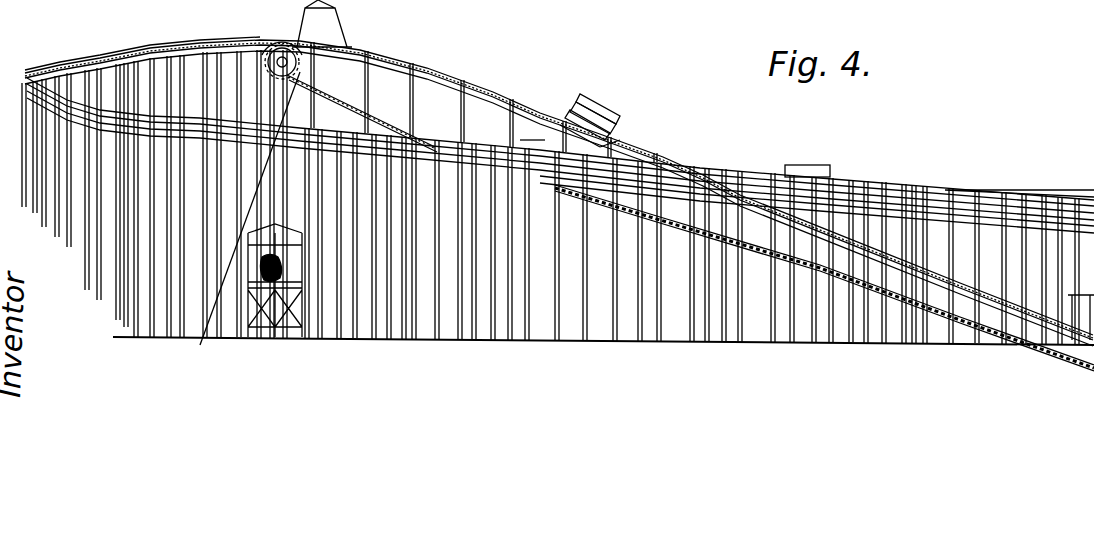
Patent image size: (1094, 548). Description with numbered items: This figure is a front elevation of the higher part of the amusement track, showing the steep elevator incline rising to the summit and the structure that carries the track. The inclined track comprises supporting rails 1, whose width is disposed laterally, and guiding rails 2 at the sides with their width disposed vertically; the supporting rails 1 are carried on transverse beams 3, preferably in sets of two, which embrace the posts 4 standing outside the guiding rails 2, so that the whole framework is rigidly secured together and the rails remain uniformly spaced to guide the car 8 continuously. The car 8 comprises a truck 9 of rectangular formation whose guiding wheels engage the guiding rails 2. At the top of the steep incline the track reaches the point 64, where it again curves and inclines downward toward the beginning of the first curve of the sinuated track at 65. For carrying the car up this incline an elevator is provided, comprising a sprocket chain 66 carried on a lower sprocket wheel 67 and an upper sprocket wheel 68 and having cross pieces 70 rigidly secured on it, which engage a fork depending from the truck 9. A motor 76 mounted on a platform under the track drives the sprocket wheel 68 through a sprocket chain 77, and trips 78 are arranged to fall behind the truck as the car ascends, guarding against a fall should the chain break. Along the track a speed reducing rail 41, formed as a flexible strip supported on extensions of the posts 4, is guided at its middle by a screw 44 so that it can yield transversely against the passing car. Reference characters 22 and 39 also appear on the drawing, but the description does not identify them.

The supporting rails 1 is at (434, 92).
The guiding rails 2 is at (478, 92).
The transverse beams 3 is at (488, 140).
The posts 4 is at (434, 238).
The car 8 is at (600, 122).
The truck 9 is at (612, 140).
The bracket 22 is at (618, 128).
The plate 39 is at (604, 95).
The rail 41 is at (30, 80).
The screw 44 is at (290, 122).
The point 64 is at (300, 50).
The sinuated track 65 is at (78, 57).
The sprocket chain 66 is at (425, 80).
The sprocket wheel 67 is at (1093, 372).
The sprocket wheel 68 is at (275, 48).
The cross pieces 70 is at (398, 114).
The motor 76 is at (272, 340).
The sprocket chain 77 is at (243, 224).
The trips 78 is at (531, 131).